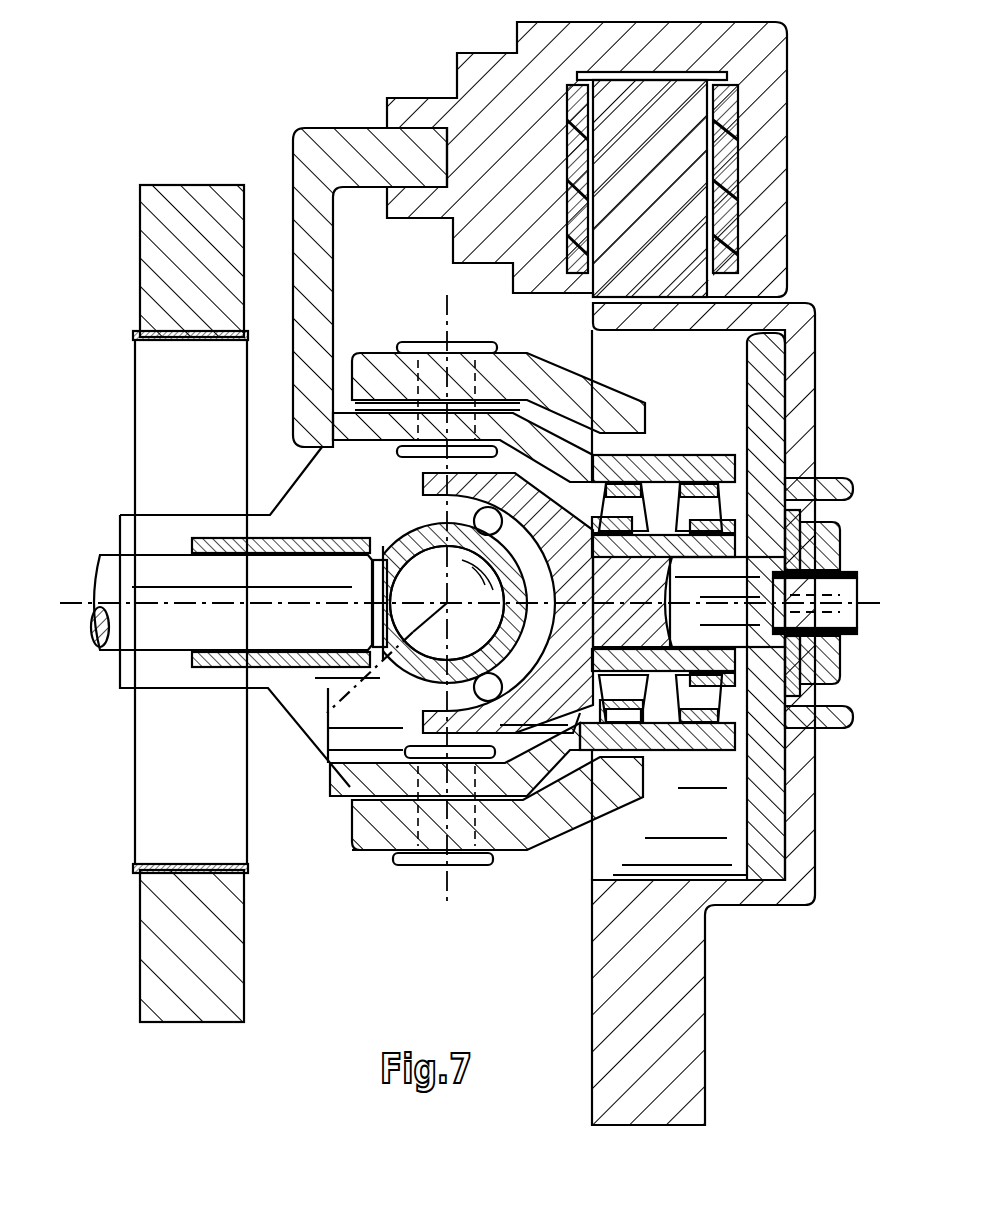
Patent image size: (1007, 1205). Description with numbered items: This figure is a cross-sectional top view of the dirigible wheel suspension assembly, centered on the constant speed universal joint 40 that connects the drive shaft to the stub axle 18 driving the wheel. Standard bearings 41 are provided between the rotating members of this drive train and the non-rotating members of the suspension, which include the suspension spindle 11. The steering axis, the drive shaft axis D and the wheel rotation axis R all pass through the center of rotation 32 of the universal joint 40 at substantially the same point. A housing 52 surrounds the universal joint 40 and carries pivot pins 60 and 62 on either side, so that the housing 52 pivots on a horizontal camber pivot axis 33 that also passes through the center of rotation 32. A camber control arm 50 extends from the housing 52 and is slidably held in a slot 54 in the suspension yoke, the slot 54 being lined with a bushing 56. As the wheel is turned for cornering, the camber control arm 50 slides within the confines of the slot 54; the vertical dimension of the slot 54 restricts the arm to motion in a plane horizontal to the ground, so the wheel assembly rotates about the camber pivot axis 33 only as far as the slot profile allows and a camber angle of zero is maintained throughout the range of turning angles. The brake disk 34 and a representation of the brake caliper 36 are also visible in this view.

The suspension spindle 11 is at (598, 393).
The stub axle 18 is at (750, 550).
The center of rotation 32 is at (380, 662).
The camber pivot axis 33 is at (445, 887).
The brake disk 34 is at (686, 198).
The brake caliper 36 is at (752, 57).
The constant speed universal joint 40 is at (398, 665).
The bearings 41 is at (700, 525).
The camber control arm 50 is at (122, 665).
The housing 52 is at (368, 410).
The slot 54 is at (152, 445).
The bushing 56 is at (182, 338).
The pivot pin 60 is at (455, 350).
The pivot pin 62 is at (468, 862).
The drive shaft axis D is at (70, 603).
The wheel rotation axis R is at (866, 603).